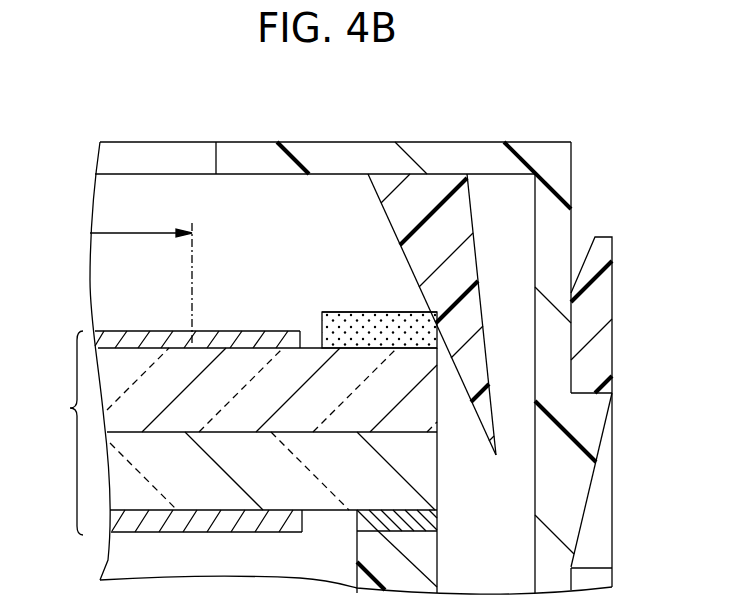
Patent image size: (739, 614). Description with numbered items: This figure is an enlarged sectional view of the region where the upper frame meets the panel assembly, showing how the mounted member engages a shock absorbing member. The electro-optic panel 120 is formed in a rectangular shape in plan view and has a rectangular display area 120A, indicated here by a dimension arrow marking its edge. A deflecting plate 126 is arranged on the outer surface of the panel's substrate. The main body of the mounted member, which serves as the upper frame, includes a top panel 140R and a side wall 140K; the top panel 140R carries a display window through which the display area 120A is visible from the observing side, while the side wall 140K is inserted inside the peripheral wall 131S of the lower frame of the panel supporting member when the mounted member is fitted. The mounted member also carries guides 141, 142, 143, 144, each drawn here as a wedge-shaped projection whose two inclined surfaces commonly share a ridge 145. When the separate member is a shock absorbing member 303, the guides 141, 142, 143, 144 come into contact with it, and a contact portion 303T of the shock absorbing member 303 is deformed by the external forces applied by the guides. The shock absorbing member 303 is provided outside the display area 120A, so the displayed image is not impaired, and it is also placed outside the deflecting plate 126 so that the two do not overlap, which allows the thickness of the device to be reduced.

The electro-optic panel 120 is at (317, 368).
The display area 120A is at (128, 233).
The deflecting plate 126 is at (228, 333).
The shock absorbing member 303 is at (351, 285).
The contact portion 303T is at (437, 321).
The top panel 140R is at (336, 147).
The side wall 140K is at (560, 217).
The peripheral wall 131S is at (605, 305).
The guide 141 is at (483, 262).
The guide 142 is at (402, 314).
The guide 143 is at (402, 314).
The guide 144 is at (402, 314).
The ridge 145 is at (385, 208).